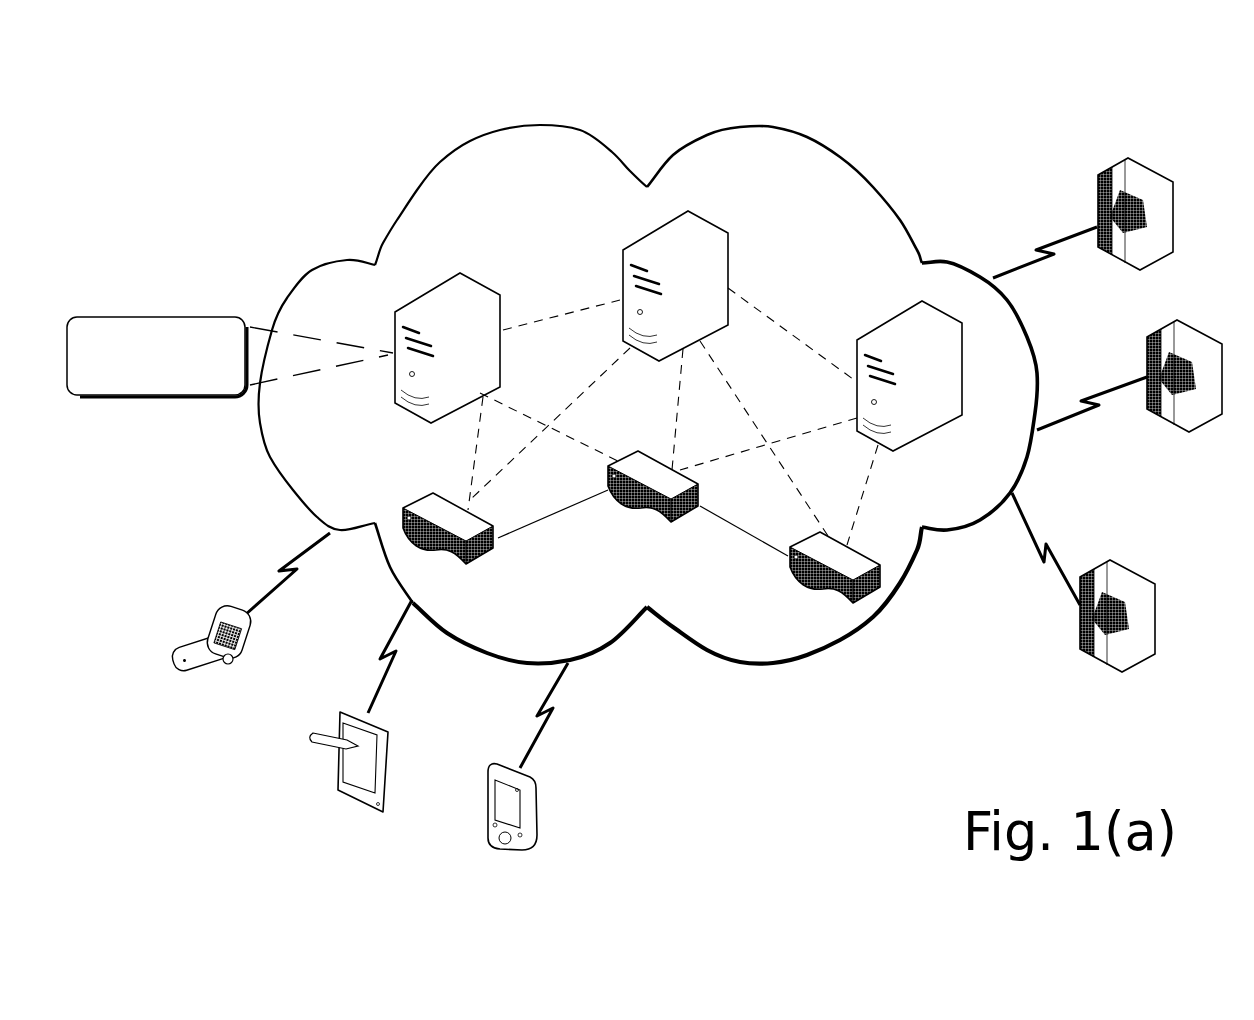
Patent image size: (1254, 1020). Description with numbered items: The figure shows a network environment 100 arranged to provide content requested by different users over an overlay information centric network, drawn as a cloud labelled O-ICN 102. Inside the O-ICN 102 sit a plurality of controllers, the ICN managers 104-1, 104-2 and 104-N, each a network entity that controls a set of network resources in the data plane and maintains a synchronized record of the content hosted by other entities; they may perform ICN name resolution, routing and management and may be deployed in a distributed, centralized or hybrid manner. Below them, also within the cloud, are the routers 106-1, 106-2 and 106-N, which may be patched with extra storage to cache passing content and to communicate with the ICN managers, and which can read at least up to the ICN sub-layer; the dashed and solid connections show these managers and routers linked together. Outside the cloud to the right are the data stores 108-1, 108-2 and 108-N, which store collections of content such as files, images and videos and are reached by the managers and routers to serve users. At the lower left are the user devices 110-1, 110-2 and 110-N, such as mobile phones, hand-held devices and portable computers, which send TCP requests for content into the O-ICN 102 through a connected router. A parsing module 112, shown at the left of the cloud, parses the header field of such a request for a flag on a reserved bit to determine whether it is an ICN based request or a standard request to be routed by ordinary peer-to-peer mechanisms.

The network environment 100 is at (646, 101).
The O-ICN 102 is at (648, 394).
The ICN manager 104-1 is at (477, 281).
The ICN manager 104-2 is at (728, 253).
The ICN manager 104-N is at (906, 311).
The router 106-1 is at (479, 566).
The router 106-2 is at (639, 512).
The router 106-N is at (807, 589).
The data store 108-1 is at (1130, 159).
The data store 108-2 is at (1170, 323).
The data store 108-N is at (1112, 561).
The user device 110-1 is at (228, 664).
The user device 110-2 is at (388, 770).
The user device 110-N is at (538, 810).
The parsing module 112 is at (157, 357).